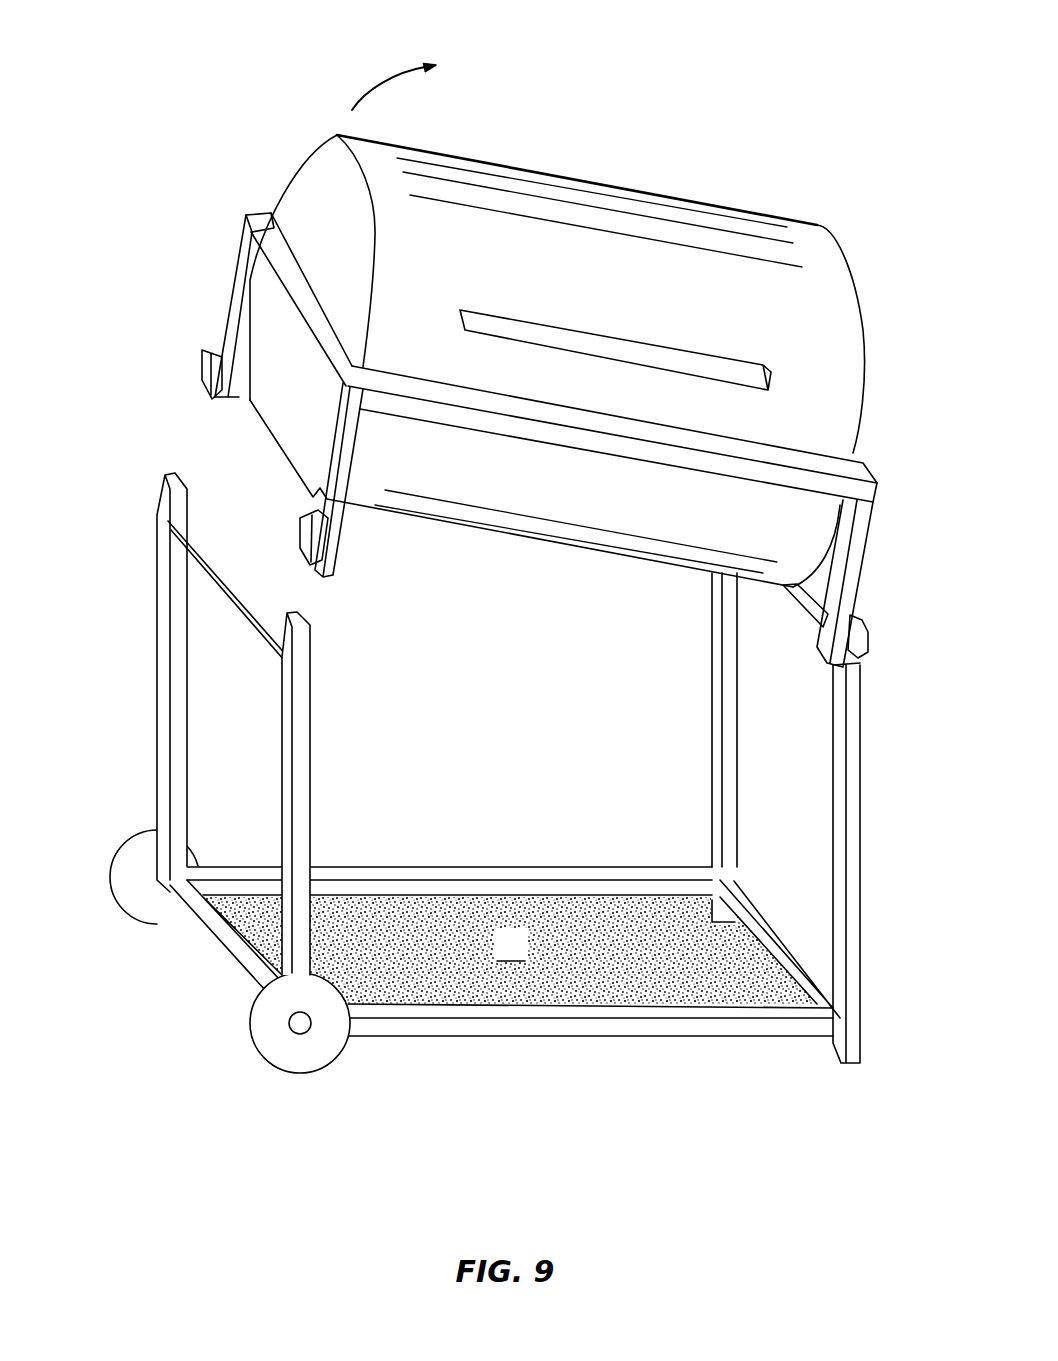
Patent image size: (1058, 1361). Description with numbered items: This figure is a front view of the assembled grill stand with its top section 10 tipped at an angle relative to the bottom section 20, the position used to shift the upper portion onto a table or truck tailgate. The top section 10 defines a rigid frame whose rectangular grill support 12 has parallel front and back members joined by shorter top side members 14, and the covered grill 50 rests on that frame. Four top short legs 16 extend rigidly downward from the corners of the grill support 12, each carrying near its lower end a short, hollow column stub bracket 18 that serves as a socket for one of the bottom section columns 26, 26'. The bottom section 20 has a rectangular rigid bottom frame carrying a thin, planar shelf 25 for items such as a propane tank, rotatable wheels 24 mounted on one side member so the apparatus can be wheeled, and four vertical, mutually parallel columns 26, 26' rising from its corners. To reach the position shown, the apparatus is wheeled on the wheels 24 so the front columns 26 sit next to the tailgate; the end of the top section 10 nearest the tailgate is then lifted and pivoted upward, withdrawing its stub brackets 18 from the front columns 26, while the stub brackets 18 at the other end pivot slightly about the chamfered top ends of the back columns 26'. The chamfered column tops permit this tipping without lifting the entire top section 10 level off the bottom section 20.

The top section 10 is at (157, 60).
The grill support 12 is at (858, 456).
The top side members 14 is at (288, 268).
The top short legs 16 is at (240, 282).
The column stub bracket 18 is at (205, 372).
The bottom section 20 is at (157, 1052).
The wheels 24 is at (133, 875).
The shelf 25 is at (497, 961).
The bottom section columns 26 is at (200, 724).
The bottom section columns 26' is at (746, 818).
The covered grill 50 is at (820, 234).